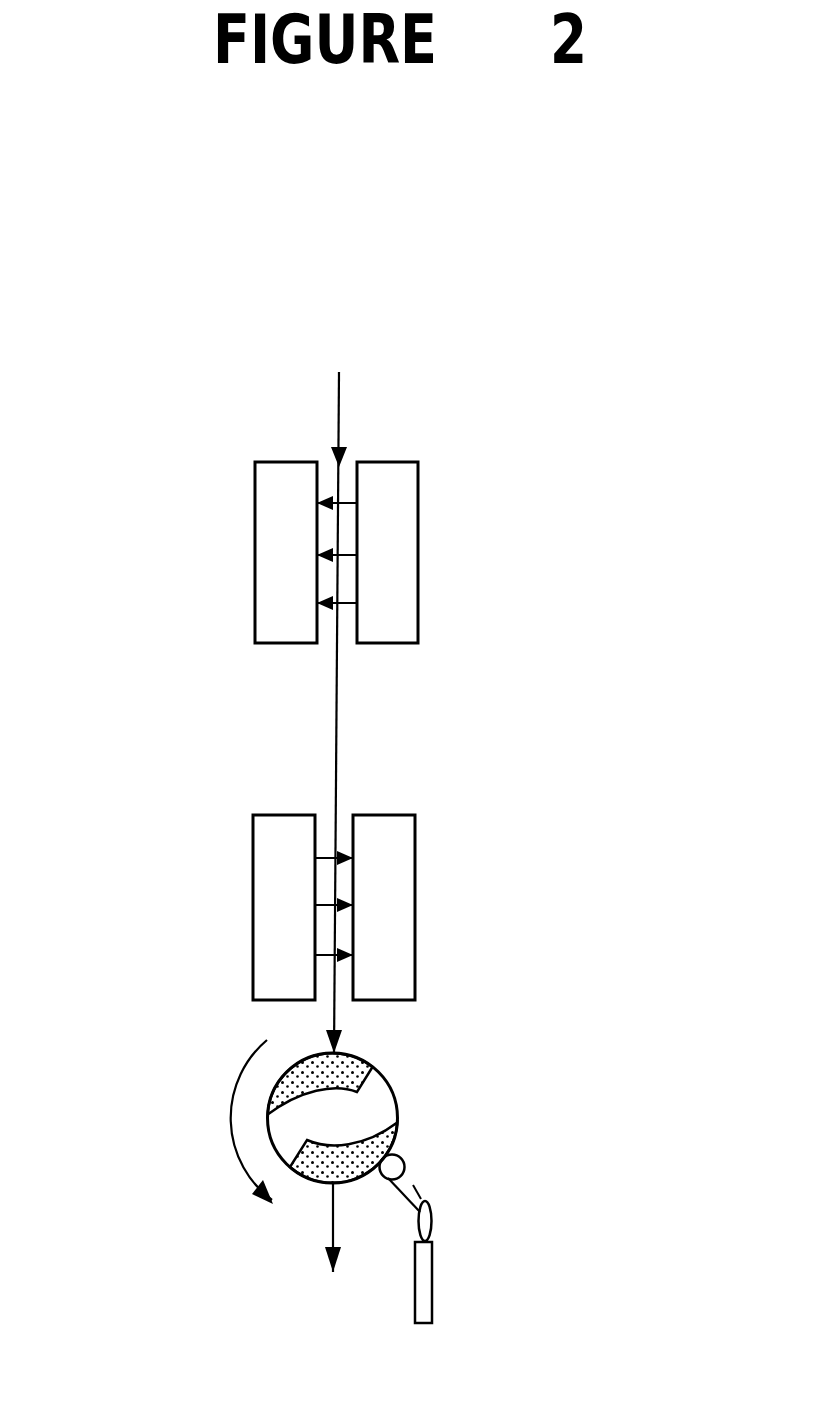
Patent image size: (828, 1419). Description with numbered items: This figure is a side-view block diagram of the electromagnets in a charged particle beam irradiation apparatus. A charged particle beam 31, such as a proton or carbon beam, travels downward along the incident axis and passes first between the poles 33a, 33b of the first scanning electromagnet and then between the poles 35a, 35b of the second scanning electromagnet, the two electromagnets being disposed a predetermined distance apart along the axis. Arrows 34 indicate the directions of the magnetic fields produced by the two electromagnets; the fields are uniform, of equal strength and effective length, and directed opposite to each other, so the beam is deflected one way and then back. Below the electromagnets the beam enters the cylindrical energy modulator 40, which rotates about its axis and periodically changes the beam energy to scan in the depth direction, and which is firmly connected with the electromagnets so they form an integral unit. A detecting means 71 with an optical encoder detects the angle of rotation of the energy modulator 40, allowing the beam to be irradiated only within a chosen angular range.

The charged particle beam 31 is at (339, 405).
The scanning electromagnet pole 33a is at (255, 553).
The scanning electromagnet pole 33b is at (418, 508).
The directions of the magnetic fields 34 is at (345, 605).
The scanning electromagnet pole 35a is at (253, 937).
The scanning electromagnet pole 35b is at (415, 877).
The energy modulator 40 is at (387, 1080).
The detecting means 71 is at (432, 1268).